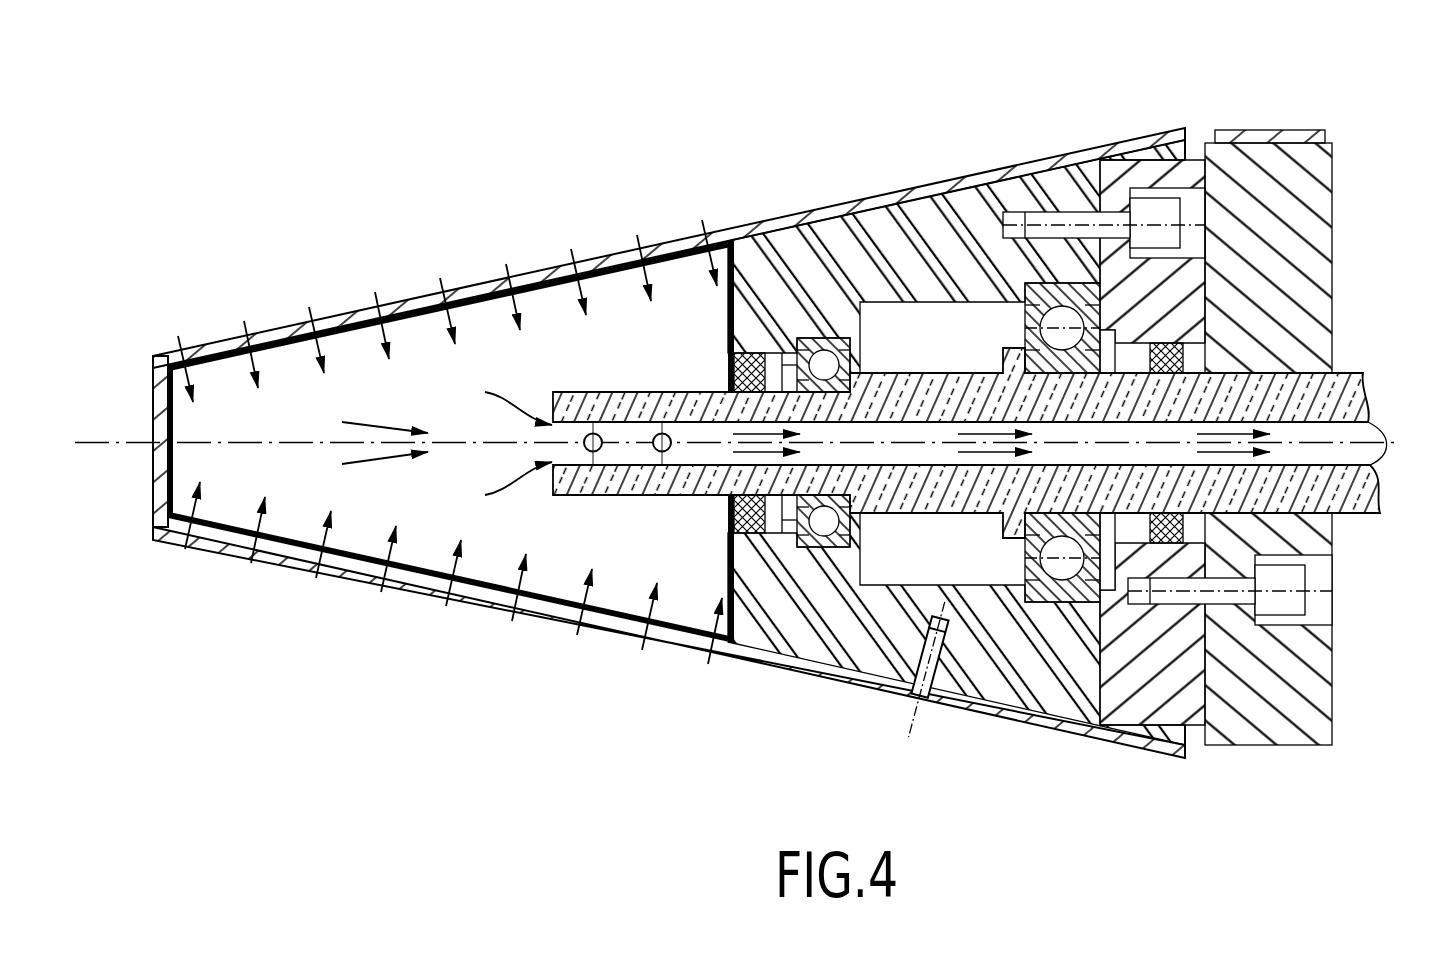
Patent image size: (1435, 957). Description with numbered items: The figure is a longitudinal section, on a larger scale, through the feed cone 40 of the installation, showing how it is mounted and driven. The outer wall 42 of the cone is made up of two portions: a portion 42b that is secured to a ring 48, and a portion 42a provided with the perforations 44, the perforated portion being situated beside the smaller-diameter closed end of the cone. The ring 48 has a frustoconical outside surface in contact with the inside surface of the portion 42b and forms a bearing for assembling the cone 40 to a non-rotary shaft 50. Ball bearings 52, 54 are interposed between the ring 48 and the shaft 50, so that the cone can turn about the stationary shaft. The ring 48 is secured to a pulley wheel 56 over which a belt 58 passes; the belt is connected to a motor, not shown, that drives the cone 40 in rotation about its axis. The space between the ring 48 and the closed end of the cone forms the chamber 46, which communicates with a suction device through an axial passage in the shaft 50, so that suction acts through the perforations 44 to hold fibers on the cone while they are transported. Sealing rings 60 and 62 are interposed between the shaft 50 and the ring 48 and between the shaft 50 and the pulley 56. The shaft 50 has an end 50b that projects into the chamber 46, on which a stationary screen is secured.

The cone 40 is at (746, 170).
The outer wall 42 is at (900, 184).
The perforated portion of the wall 42a is at (470, 300).
The wall portion secured to the ring 42b is at (1028, 176).
The perforations 44 is at (712, 242).
The chamber 46 is at (370, 378).
The ring 48 is at (1078, 188).
The shaft 50 is at (1370, 490).
The end of the shaft 50b is at (615, 482).
The ball bearing 52 is at (818, 548).
The ball bearing 54 is at (1063, 575).
The pulley wheel 56 is at (1333, 212).
The belt 58 is at (1270, 131).
The sealing ring 60 is at (746, 538).
The sealing ring 62 is at (1175, 345).